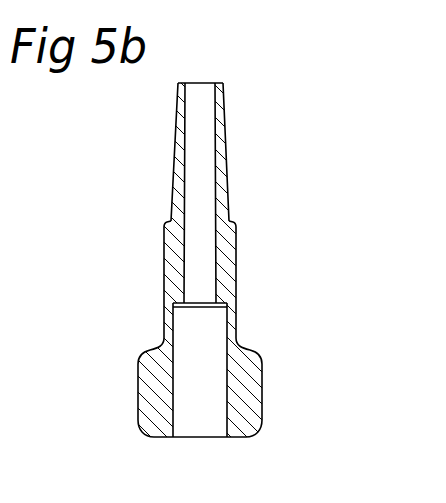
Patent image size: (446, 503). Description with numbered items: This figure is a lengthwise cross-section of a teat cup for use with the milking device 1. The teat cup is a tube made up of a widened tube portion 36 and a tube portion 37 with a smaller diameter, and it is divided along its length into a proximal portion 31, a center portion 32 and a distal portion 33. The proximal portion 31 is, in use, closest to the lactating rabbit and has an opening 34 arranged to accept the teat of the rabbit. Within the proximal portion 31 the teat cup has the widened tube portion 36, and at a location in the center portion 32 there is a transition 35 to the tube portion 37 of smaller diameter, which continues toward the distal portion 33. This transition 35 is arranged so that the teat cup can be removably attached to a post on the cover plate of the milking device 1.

The proximal portion 31 is at (258, 388).
The center portion 32 is at (230, 240).
The distal portion 33 is at (221, 119).
The opening 34 is at (168, 438).
The internal shoulder step 35 is at (222, 305).
The widened tube portion 36 is at (213, 418).
The tube portion with smaller diameter 37 is at (195, 100).
The milking device 1 is at (6, 348).